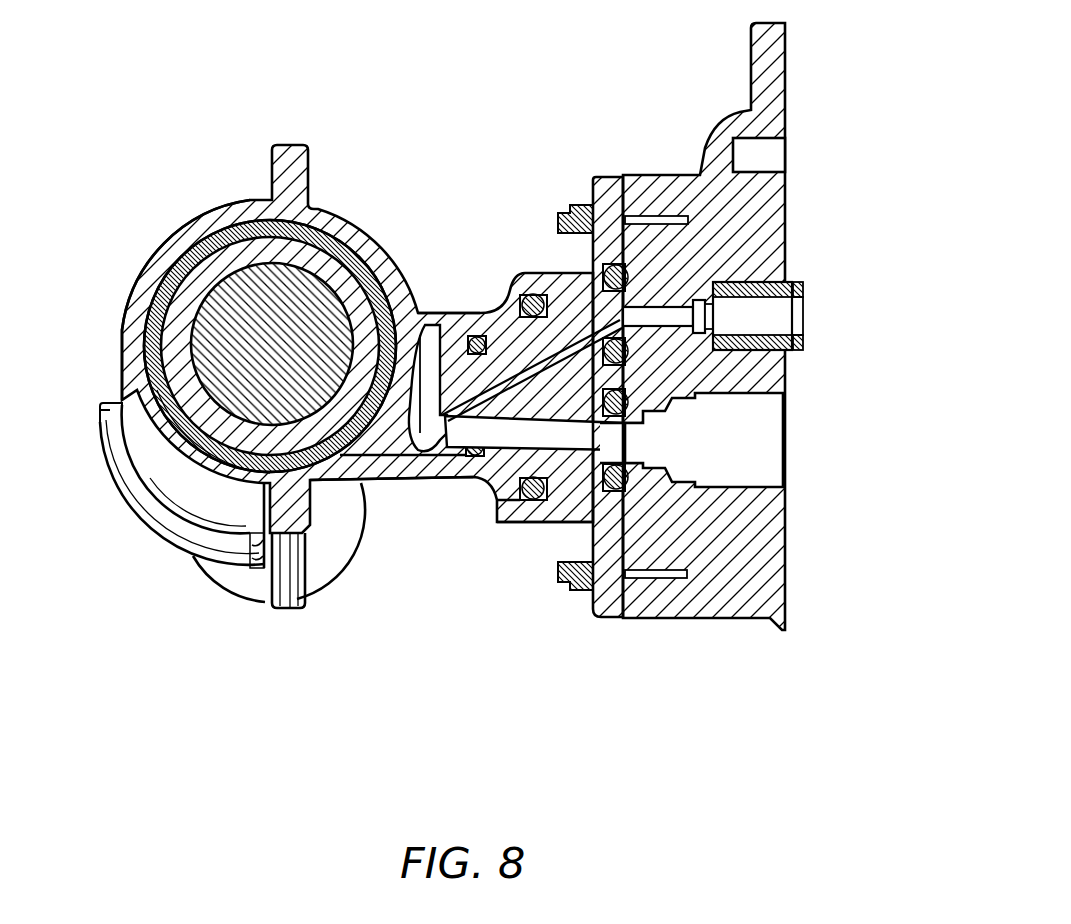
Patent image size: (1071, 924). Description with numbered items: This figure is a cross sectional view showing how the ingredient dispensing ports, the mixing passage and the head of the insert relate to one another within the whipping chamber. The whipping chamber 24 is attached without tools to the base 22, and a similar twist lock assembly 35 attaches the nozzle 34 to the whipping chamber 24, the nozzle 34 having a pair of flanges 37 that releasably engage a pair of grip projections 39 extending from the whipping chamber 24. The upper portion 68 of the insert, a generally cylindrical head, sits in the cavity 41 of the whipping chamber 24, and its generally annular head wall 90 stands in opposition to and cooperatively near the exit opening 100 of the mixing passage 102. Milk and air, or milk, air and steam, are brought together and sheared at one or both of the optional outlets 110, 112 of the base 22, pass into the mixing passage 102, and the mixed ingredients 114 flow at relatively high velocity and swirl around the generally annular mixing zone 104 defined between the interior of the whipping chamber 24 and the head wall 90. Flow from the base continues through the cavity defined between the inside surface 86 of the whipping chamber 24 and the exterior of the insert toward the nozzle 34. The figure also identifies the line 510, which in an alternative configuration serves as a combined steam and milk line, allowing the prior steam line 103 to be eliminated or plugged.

The base 22 is at (692, 158).
The whipping chamber 24 is at (136, 260).
The nozzle 34 is at (330, 560).
The twist lock assembly 35 is at (232, 612).
The flanges 37 is at (157, 510).
The grip projections 39 is at (288, 608).
The cavity 41 is at (257, 442).
The upper portion 68 is at (200, 270).
The inside surface 86 is at (140, 330).
The head wall 90 is at (350, 250).
The exit opening 100 is at (347, 448).
The mixing passage 102 is at (403, 455).
The steam line 103 is at (568, 438).
The mixing zone 104 is at (238, 237).
The dispensing port 110 is at (520, 437).
The dispensing port 112 is at (447, 408).
The mixed ingredients 114 is at (410, 395).
The line 510 is at (575, 340).